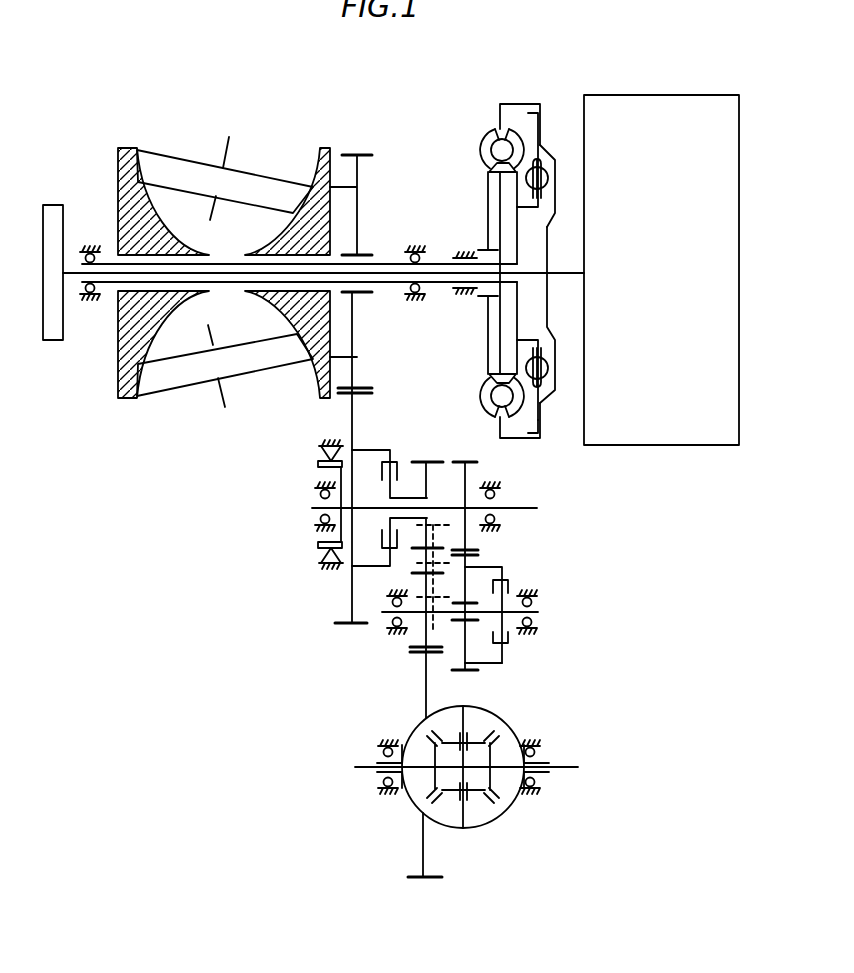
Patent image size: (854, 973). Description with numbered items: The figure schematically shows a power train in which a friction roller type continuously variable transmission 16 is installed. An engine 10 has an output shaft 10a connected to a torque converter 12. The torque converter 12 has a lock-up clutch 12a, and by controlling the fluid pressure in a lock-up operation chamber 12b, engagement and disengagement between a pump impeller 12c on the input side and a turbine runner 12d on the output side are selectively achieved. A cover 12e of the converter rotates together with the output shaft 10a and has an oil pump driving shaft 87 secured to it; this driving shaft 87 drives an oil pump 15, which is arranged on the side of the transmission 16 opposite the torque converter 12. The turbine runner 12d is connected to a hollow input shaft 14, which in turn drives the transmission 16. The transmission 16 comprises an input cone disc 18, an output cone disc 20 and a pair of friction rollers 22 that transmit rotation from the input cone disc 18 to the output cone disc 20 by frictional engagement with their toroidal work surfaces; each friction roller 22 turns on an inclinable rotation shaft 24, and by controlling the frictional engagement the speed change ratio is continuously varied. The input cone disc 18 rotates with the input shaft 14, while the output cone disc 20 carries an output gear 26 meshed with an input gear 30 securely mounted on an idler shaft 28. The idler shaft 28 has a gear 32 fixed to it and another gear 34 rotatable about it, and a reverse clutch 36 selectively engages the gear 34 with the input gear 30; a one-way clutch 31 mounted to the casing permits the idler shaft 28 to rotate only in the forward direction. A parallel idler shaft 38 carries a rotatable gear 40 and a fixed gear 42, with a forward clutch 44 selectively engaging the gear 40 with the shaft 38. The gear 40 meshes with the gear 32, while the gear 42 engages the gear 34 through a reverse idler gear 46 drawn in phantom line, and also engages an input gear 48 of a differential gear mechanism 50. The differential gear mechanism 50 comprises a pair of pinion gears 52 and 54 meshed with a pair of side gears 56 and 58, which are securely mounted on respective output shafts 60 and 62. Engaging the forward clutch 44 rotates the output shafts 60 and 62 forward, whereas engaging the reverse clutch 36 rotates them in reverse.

The engine 10 is at (642, 92).
The output shaft 10a is at (562, 272).
The torque converter 12 is at (519, 255).
The lock-up clutch 12a is at (530, 433).
The lock-up operation chamber 12b is at (532, 311).
The pump impeller 12c is at (483, 140).
The turbine runner 12d is at (514, 150).
The cover 12e is at (548, 236).
The input shaft 14 is at (388, 263).
The oil pump 15 is at (58, 197).
The friction roller type continuously variable transmission 16 is at (204, 264).
The input cone disc 18 is at (117, 328).
The output cone disc 20 is at (322, 396).
The friction roller 22 is at (175, 153).
The rotation shaft 24 is at (229, 140).
The output gear 26 is at (366, 154).
The idler shaft 28 is at (366, 510).
The input gear 30 is at (337, 630).
The one-way clutch 31 is at (318, 560).
The gear 32 is at (468, 458).
The gear 34 is at (420, 461).
The reverse clutch 36 is at (394, 452).
The idler shaft 38 is at (388, 613).
The gear 40 is at (478, 665).
The gear 42 is at (408, 648).
The forward clutch 44 is at (511, 568).
The reverse idler gear 46 is at (434, 606).
The input gear 48 is at (408, 877).
The differential gear mechanism 50 is at (470, 769).
The pinion gear 52 is at (475, 740).
The pinion gear 54 is at (475, 798).
The side gear 56 is at (428, 784).
The side gear 58 is at (495, 786).
The output shaft 60 is at (357, 768).
The output shaft 62 is at (567, 767).
The oil pump driving shaft 87 is at (383, 281).